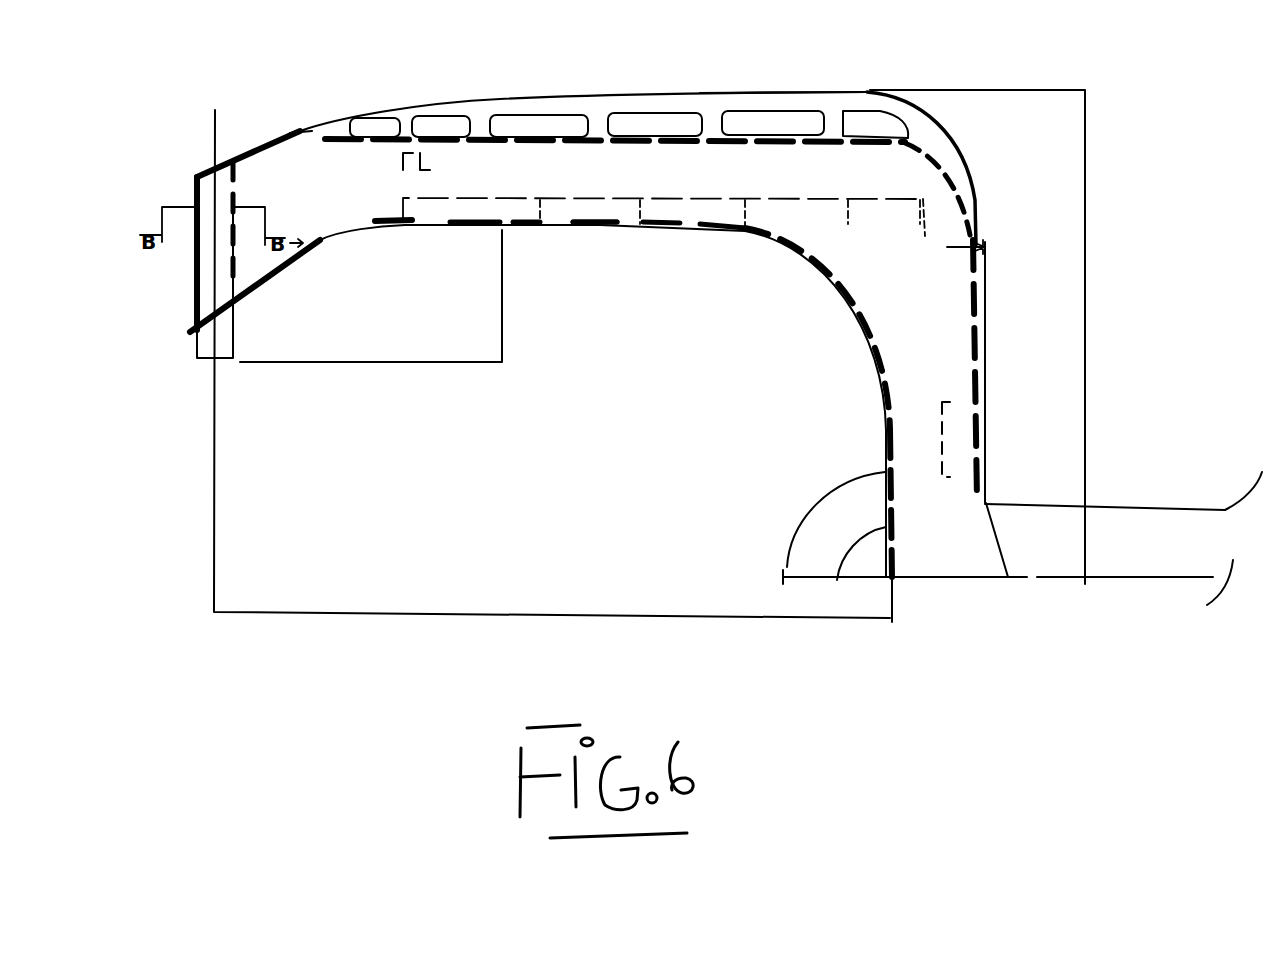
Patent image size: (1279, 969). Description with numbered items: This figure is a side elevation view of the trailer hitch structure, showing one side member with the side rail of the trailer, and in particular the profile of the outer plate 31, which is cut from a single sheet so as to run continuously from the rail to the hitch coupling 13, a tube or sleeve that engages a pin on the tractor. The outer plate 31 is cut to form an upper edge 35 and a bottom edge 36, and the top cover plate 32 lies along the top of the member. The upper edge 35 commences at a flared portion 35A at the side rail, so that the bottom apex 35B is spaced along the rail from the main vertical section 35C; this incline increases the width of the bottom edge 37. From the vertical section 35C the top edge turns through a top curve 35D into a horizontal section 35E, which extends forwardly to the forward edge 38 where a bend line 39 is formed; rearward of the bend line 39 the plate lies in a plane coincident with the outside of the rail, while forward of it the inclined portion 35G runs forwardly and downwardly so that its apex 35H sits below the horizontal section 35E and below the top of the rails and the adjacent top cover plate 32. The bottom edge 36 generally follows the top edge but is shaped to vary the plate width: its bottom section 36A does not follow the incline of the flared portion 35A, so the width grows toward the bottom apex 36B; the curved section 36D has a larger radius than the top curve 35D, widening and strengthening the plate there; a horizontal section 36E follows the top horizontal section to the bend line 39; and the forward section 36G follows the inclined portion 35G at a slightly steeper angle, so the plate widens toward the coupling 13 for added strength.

The hitch coupling 13 is at (225, 328).
The outer plate 31 is at (598, 160).
The top cover plate 32 is at (540, 140).
The upper edge 35 is at (710, 92).
The flared portion 35A is at (1000, 545).
The bottom apex 35B is at (1022, 580).
The vertical section 35C is at (986, 503).
The top curve 35D is at (937, 123).
The horizontal section 35E is at (793, 90).
The inclined portion 35G is at (268, 132).
The apex 35H is at (196, 178).
The bottom edge 36 is at (680, 225).
The bottom section 36A is at (843, 572).
The bottom apex 36B is at (890, 582).
The curved section 36D is at (808, 273).
The horizontal section 36E is at (617, 225).
The forward bottom edge section 36G is at (313, 248).
The bottom edge 37 is at (940, 583).
The forward edge 38 is at (440, 120).
The bend line 39 is at (393, 167).